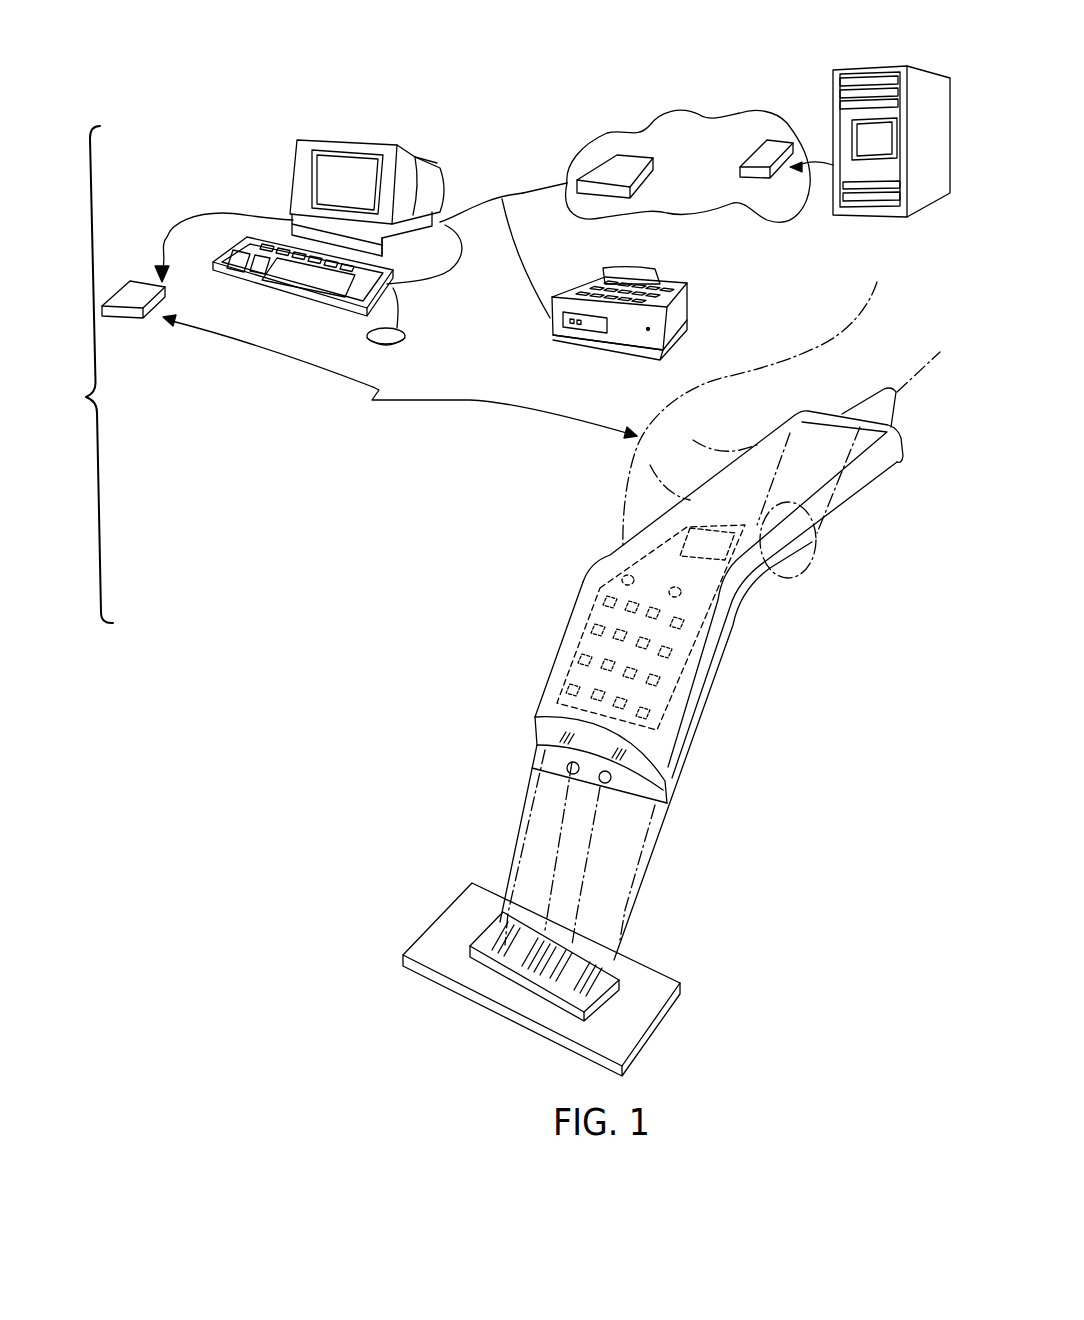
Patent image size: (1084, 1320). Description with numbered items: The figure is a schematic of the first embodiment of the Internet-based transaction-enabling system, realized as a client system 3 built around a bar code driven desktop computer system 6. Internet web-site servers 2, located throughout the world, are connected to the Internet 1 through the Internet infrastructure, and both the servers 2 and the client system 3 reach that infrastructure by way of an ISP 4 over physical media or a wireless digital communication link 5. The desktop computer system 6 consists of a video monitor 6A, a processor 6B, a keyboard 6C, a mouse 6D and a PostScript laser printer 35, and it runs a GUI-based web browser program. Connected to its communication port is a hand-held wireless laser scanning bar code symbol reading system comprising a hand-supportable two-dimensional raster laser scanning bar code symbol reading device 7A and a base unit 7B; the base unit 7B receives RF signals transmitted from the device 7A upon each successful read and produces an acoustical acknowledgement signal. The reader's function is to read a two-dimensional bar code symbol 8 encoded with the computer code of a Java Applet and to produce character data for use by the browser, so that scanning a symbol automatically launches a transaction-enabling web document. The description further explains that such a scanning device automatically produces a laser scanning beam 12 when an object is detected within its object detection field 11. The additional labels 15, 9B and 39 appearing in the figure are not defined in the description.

The Internet 1 is at (780, 117).
The Internet Web-site Server 2 is at (887, 217).
The client system 3 is at (87, 374).
The ISP 4 is at (634, 153).
The wireless digital communication link 5 is at (535, 183).
The desktop computer system 6 is at (297, 116).
The video monitor 6A is at (357, 142).
The processor 6B is at (427, 162).
The keyboard 6C is at (302, 294).
The mouse 6D is at (405, 340).
The hand-supportable 2-D laser scanning bar code symbol reading device 7A is at (853, 506).
The base unit 7B is at (124, 318).
The 2-D bar code symbol 8 is at (510, 945).
The handle portion 9B is at (618, 980).
The object detection field 11 is at (535, 777).
The laser scanning beam 12 is at (520, 820).
The keypad 15 is at (605, 550).
The Postscript laser printer 35 is at (685, 330).
The printed output 39 is at (652, 270).